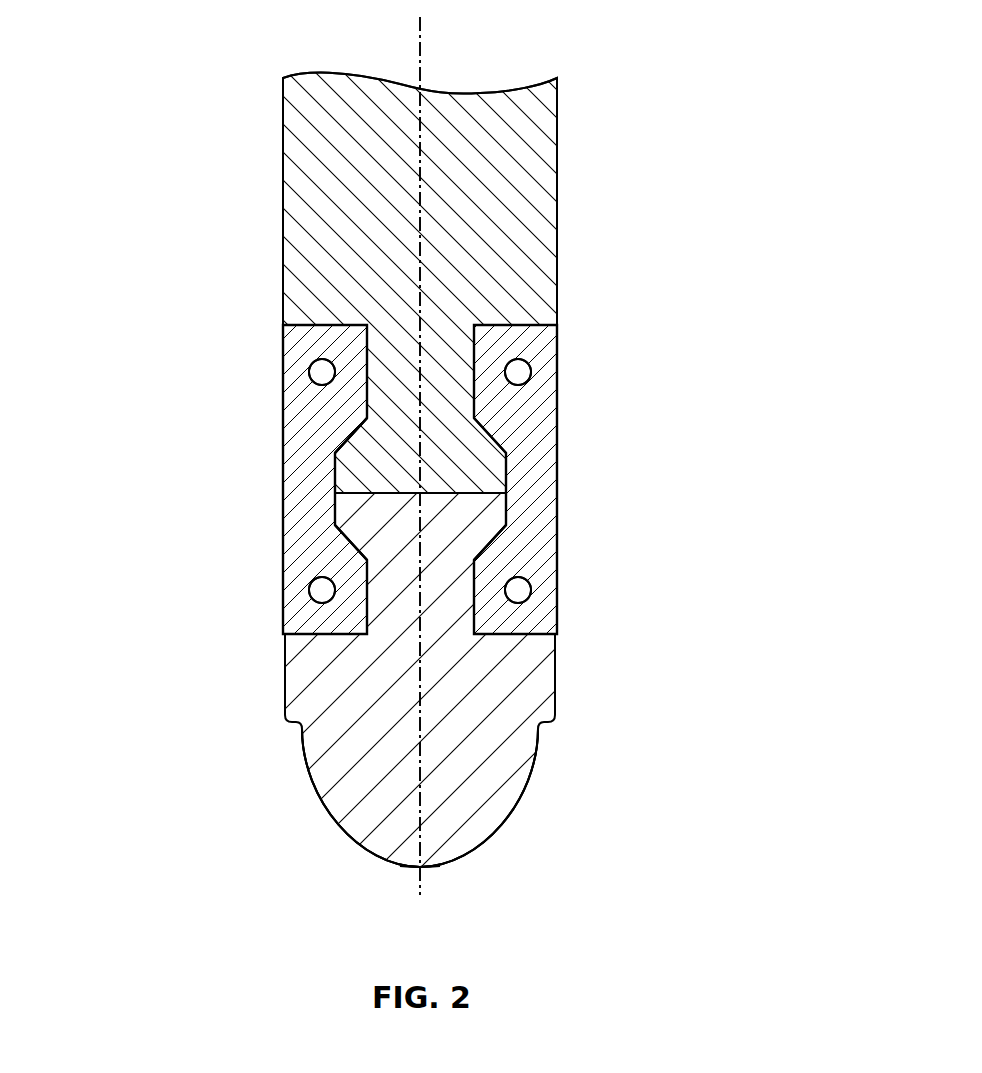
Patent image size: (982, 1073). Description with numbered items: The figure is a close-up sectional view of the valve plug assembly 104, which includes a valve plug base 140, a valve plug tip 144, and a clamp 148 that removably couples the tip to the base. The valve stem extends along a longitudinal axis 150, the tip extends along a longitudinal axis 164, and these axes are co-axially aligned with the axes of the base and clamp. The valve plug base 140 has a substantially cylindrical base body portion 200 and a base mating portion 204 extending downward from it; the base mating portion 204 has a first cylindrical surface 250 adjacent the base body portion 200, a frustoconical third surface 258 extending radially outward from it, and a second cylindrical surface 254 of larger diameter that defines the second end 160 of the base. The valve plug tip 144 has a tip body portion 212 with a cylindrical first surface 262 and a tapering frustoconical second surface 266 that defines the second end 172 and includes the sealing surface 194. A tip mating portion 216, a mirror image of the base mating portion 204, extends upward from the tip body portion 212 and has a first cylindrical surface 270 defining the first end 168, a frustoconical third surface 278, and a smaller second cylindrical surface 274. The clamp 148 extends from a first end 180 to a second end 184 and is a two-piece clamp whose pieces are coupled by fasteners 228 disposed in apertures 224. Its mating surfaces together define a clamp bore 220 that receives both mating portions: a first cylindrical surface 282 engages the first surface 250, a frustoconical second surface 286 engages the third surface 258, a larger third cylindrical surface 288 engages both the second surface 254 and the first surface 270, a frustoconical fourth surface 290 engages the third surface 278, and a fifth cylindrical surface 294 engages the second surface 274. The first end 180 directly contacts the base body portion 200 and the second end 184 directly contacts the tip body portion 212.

The valve plug assembly 104 is at (650, 110).
The valve plug base 140 is at (268, 142).
The valve plug tip 144 is at (272, 713).
The clamp 148 is at (278, 487).
The longitudinal axis 150 is at (420, 38).
The longitudinal axis 164 is at (497, 456).
The second end 160 is at (442, 489).
The first end 168 is at (466, 494).
The second end 172 is at (424, 869).
The first end 180 is at (322, 323).
The second end 184 is at (506, 636).
The sealing surface 194 is at (486, 838).
The base body portion 200 is at (540, 172).
The base mating portion 204 is at (430, 388).
The tip body portion 212 is at (333, 765).
The tip mating portion 216 is at (373, 522).
The clamp bore 220 is at (334, 478).
The apertures 224 is at (310, 368).
The fasteners 228 is at (322, 374).
The first surface 250 is at (358, 337).
The second surface 254 is at (334, 462).
The third surface 258 is at (352, 427).
The first surface 262 is at (558, 668).
The second surface 266 is at (526, 779).
The first surface 270 is at (507, 512).
The second surface 274 is at (490, 621).
The third surface 278 is at (485, 558).
The first mating surface 282 is at (387, 342).
The second mating surface 286 is at (392, 416).
The third mating surface 288 is at (338, 470).
The fourth mating surface 290 is at (358, 538).
The fifth mating surface 294 is at (372, 628).